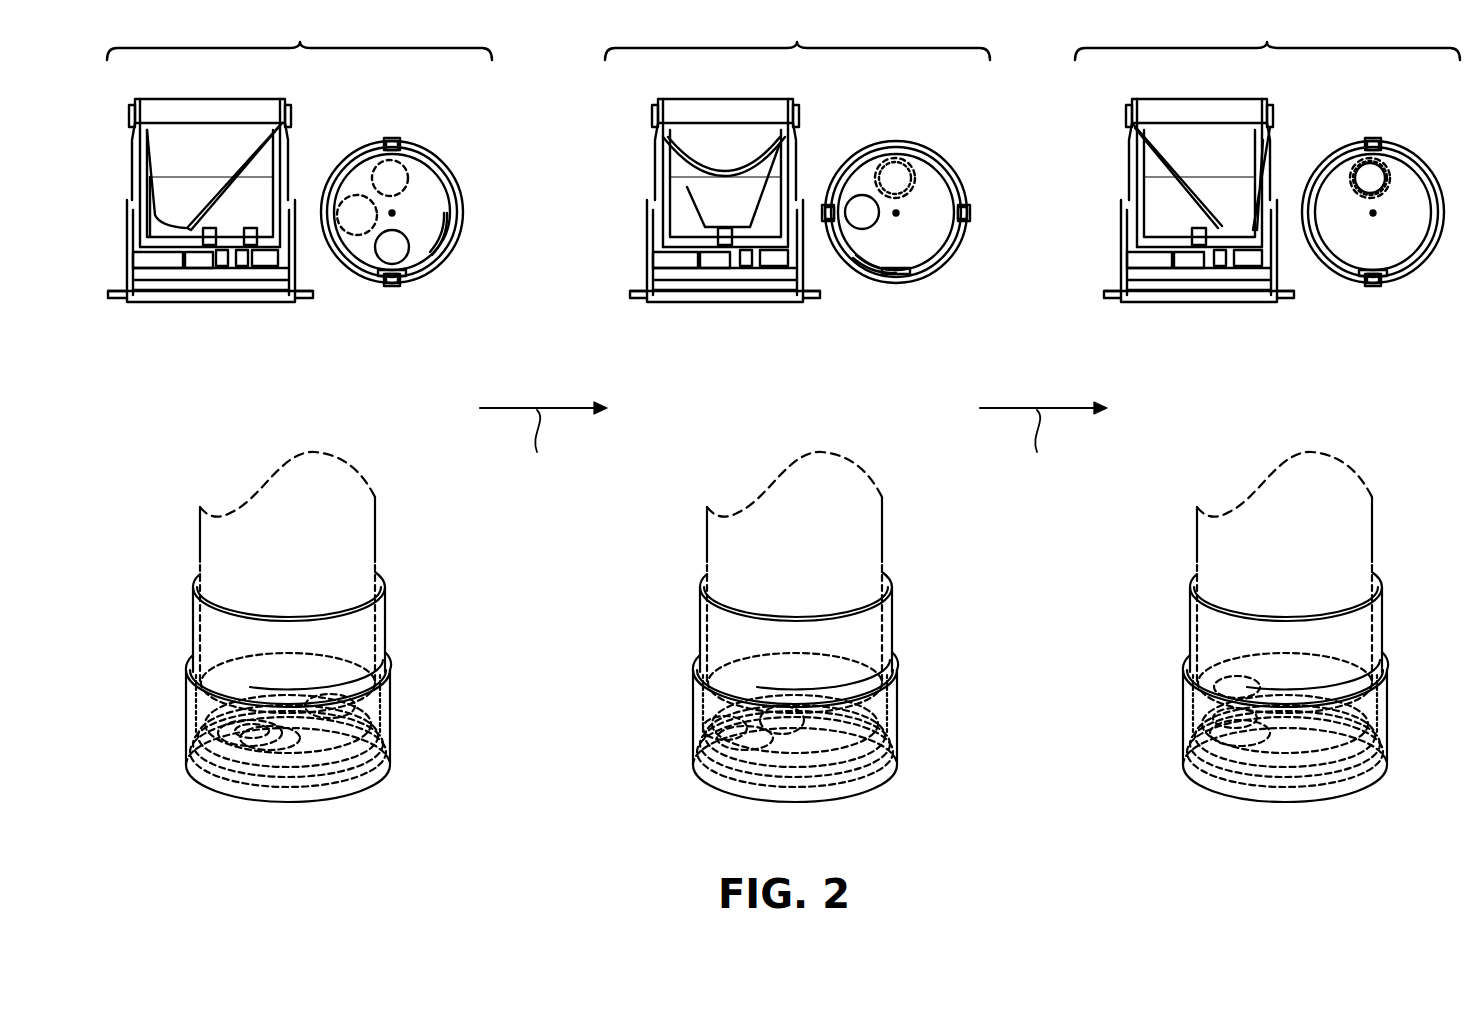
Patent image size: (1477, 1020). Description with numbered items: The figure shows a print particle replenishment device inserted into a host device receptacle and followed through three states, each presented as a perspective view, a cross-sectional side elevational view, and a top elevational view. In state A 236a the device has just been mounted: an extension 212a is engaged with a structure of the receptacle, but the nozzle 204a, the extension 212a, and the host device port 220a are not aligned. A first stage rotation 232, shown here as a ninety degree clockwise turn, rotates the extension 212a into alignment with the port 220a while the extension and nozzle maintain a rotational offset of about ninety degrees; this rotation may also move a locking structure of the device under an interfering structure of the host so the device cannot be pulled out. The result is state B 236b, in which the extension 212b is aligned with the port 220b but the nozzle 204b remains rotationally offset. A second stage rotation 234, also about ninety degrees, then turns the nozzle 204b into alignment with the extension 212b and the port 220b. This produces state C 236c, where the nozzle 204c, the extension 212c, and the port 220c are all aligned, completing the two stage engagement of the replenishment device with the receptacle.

The nozzle 204a is at (183, 225).
The nozzle 204b is at (742, 230).
The nozzle 204c is at (1222, 226).
The extension 212a is at (355, 190).
The extension 212b is at (876, 165).
The extension 212c is at (1352, 160).
The host device port 220a is at (410, 170).
The host device port 220b is at (916, 160).
The host device port 220c is at (1392, 154).
The state A 236a is at (299, 36).
The state B 236b is at (797, 36).
The state C 236c is at (1267, 36).
The first stage rotation 232 is at (537, 457).
The second stage rotation 234 is at (1032, 457).